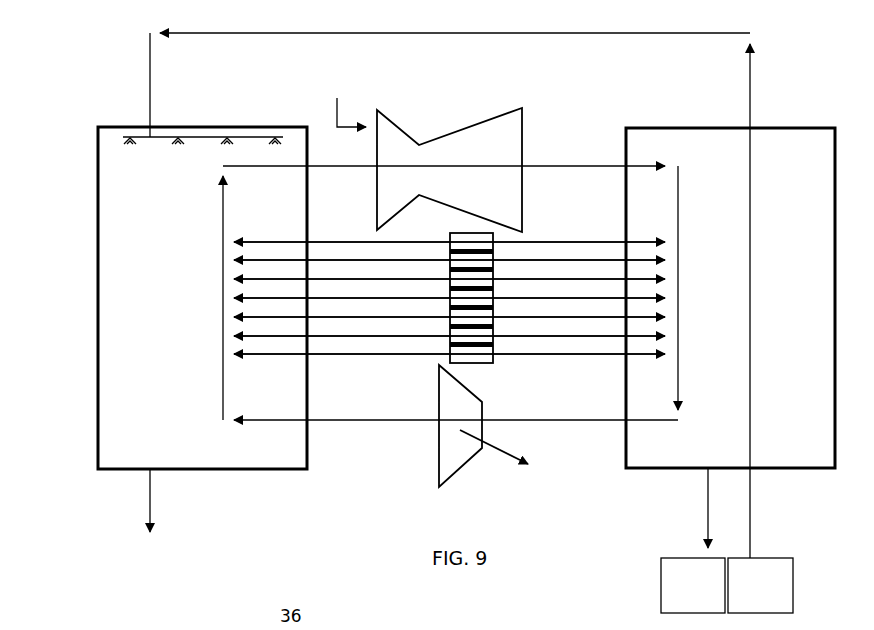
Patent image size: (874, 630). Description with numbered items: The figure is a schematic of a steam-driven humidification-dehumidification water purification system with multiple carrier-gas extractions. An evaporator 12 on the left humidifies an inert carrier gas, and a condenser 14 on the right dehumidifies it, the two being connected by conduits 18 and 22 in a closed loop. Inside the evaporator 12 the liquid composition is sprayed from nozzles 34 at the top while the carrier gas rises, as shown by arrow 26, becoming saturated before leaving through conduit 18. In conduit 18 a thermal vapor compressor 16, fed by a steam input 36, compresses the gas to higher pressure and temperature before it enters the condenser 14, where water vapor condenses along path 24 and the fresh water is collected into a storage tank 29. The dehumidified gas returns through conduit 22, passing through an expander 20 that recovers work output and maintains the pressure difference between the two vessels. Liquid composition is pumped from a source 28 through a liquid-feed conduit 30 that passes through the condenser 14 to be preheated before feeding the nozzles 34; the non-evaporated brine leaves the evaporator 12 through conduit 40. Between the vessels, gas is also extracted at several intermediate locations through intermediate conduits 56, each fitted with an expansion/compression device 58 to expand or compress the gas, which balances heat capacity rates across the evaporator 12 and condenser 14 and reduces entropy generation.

The evaporator 12 is at (196, 300).
The condenser 14 is at (716, 308).
The thermal vapor compressor 16 is at (456, 148).
The conduit 18 is at (545, 168).
The expander 20 is at (456, 446).
The conduit 22 is at (545, 420).
The condensation path 24 is at (681, 220).
The carrier gas flow arrow 26 is at (226, 216).
The source 28 is at (776, 599).
The storage tank 29 is at (709, 599).
The liquid-feed conduit 30 is at (520, 35).
The nozzles 34 is at (130, 140).
The steam input conduit 36 is at (335, 113).
The brine output conduit 40 is at (152, 500).
The intermediate conduits 56 is at (362, 318).
The expansion/compression device 58 is at (460, 282).